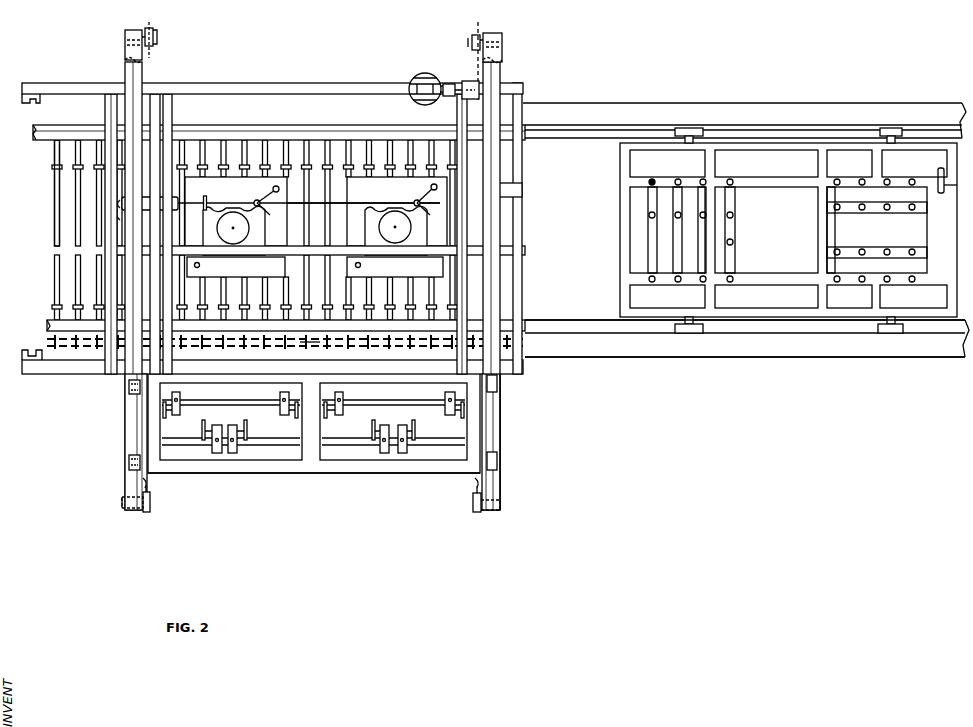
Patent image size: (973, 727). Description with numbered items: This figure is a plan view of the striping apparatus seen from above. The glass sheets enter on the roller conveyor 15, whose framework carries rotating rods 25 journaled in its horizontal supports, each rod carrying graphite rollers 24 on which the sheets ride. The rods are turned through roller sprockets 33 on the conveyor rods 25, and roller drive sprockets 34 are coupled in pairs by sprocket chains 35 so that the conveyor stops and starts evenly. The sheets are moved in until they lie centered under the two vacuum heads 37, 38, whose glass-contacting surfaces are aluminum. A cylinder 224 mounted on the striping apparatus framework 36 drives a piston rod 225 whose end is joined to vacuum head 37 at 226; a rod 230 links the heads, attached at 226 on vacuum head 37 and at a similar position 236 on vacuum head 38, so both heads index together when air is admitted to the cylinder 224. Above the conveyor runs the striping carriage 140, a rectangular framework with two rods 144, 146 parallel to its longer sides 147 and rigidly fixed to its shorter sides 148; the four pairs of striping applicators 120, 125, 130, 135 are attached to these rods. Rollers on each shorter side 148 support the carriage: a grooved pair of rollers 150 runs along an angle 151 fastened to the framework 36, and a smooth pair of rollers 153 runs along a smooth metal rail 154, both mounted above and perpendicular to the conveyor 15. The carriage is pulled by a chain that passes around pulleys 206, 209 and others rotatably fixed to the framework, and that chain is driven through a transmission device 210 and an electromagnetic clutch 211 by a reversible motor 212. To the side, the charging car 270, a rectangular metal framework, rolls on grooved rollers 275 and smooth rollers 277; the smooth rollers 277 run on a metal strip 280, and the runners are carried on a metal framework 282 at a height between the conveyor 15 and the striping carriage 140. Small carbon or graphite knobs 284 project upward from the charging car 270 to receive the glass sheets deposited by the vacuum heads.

The roller conveyor 15 is at (38, 329).
The graphite rollers 24 is at (57, 205).
The rotating rods 25 is at (55, 230).
The roller sprockets 33 is at (372, 306).
The roller drive sprockets 34 is at (95, 348).
The sprocket chains 35 is at (314, 348).
The striping apparatus framework 36 is at (97, 372).
The vacuum head 37 is at (236, 227).
The vacuum head 38 is at (397, 227).
The striping applicators 120 is at (180, 405).
The striping applicators 125 is at (232, 455).
The striping applicators 130 is at (445, 409).
The striping applicators 135 is at (402, 455).
The striping carriage 140 is at (430, 473).
The rod 144 is at (258, 397).
The rod 146 is at (263, 445).
The longer sides 147 is at (294, 473).
The shorter sides 148 is at (156, 418).
The grooved rollers 150 is at (128, 460).
The angle 151 is at (128, 106).
The smooth rollers 153 is at (498, 455).
The smooth metal rail 154 is at (501, 472).
The pulley 206 is at (150, 498).
The pulley 209 is at (157, 34).
The transmission device 210 is at (470, 80).
The electromagnetic clutch 211 is at (448, 84).
The reversible motor 212 is at (418, 78).
The cylinder 224 is at (278, 208).
The piston rod 225 is at (200, 200).
The connection point 226 is at (258, 200).
The rod 230 is at (368, 201).
The connection point 236 is at (416, 200).
The charging car 270 is at (620, 207).
The grooved rollers 275 is at (685, 128).
The smooth rollers 277 is at (692, 333).
The metal strip 280 is at (750, 328).
The metal framework 282 is at (808, 348).
The carbon or graphite knobs 284 is at (732, 242).